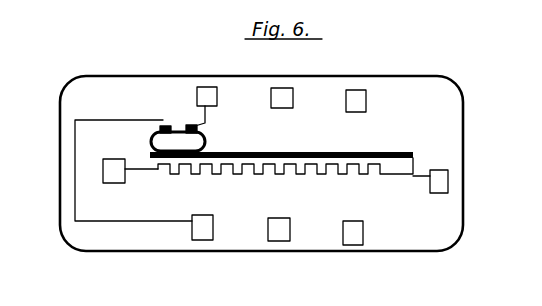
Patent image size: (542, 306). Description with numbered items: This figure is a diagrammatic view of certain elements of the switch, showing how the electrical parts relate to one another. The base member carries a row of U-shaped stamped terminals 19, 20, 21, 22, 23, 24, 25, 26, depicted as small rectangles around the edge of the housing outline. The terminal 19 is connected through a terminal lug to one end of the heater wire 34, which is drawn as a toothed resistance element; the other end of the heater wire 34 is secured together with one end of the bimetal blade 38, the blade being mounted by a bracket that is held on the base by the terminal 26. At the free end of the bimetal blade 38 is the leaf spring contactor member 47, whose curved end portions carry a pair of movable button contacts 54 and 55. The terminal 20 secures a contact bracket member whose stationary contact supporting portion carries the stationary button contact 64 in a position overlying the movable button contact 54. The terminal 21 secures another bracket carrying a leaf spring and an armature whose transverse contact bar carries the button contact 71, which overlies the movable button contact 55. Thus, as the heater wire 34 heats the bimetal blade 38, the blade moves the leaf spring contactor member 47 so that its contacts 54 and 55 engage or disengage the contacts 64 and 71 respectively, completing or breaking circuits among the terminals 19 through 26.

The terminal 19 is at (103, 168).
The terminal 20 is at (208, 87).
The terminal 21 is at (206, 240).
The terminal 22 is at (285, 97).
The terminal 23 is at (283, 241).
The terminal 24 is at (357, 99).
The terminal 25 is at (353, 245).
The terminal 26 is at (448, 177).
The heater wire 34 is at (276, 193).
The bimetal blade 38 is at (316, 154).
The leaf spring contactor member 47 is at (151, 150).
The movable button contact 54 is at (198, 130).
The movable button contact 55 is at (168, 126).
The stationary button contact 64 is at (194, 124).
The button contact 71 is at (161, 126).